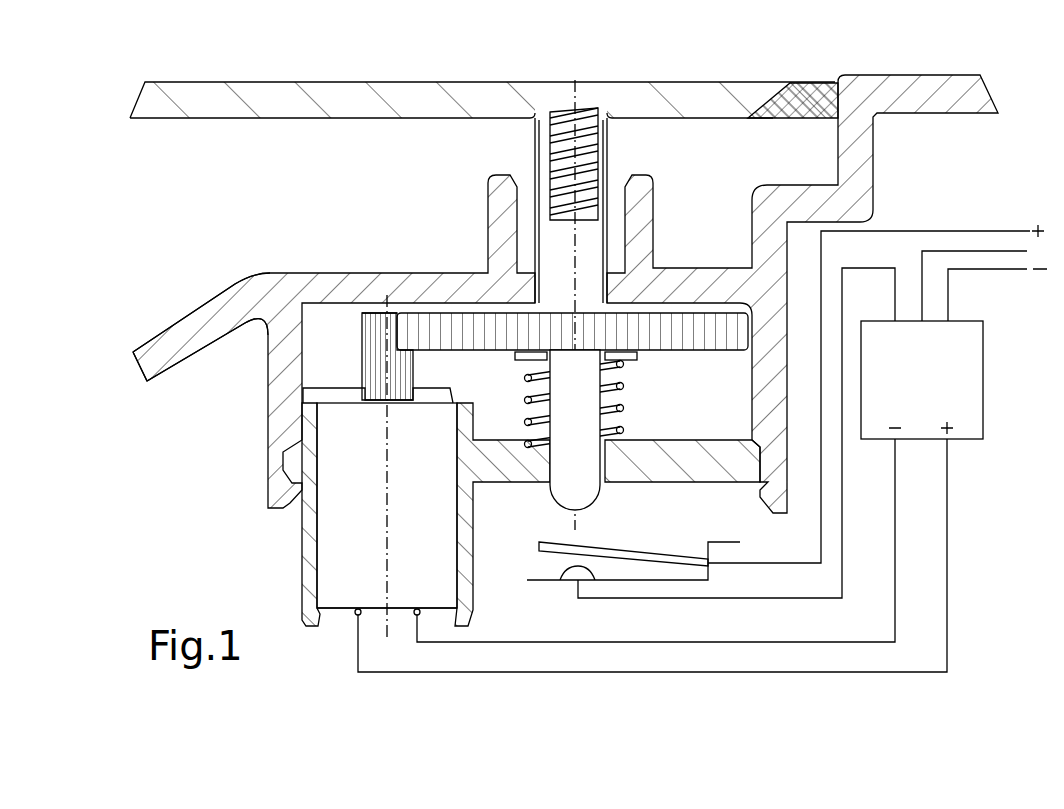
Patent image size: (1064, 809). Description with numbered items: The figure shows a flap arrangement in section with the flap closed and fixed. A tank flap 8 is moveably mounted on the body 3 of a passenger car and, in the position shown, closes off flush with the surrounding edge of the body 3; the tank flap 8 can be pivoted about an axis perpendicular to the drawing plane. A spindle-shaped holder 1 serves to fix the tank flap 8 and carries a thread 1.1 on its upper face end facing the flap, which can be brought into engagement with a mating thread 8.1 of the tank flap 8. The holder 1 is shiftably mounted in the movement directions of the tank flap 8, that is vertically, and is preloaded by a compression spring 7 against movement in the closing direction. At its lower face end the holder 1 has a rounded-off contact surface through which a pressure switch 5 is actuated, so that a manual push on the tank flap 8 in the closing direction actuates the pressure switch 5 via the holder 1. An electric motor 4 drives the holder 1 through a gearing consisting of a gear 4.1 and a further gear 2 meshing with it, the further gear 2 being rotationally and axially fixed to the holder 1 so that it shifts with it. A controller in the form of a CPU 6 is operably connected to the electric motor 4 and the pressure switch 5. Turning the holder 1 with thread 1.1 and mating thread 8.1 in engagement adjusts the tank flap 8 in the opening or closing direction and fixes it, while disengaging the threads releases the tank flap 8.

The holder 1 is at (631, 201).
The thread 1.1 is at (605, 177).
The further gear 2 is at (437, 327).
The body 3 is at (222, 320).
The electric motor 4 is at (365, 537).
The gear 4.1 is at (388, 360).
The pressure switch 5 is at (563, 577).
The CPU 6 is at (927, 397).
The compression spring 7 is at (623, 388).
The tank flap 8 is at (267, 103).
The mating thread 8.1 is at (540, 120).